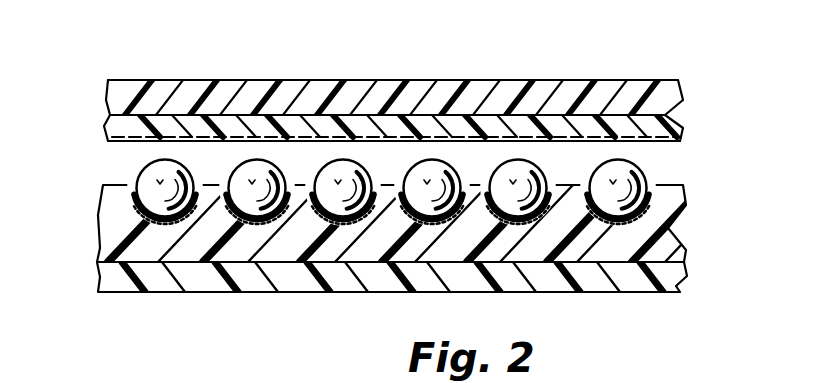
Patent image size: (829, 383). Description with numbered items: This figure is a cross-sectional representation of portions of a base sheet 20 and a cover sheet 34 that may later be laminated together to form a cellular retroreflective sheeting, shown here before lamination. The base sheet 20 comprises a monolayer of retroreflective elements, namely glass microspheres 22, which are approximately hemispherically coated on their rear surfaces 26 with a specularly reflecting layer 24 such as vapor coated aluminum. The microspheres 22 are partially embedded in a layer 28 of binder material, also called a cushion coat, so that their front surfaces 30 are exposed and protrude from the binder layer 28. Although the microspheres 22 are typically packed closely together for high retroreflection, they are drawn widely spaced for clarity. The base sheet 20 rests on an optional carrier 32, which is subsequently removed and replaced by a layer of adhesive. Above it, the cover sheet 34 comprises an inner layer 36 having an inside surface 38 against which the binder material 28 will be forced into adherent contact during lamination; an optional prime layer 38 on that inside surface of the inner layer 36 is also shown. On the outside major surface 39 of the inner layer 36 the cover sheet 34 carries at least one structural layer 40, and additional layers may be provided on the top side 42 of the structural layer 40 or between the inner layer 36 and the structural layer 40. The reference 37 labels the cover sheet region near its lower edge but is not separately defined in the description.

The base sheet 20 is at (399, 241).
The glass microspheres 22 is at (232, 180).
The specularly reflecting layer 24 is at (240, 227).
The rear surfaces 26 is at (672, 208).
The binder layer 28 is at (428, 223).
The front surfaces 30 is at (606, 170).
The carrier 32 is at (652, 283).
The cover sheet 34 is at (393, 94).
The inner layer 36 is at (369, 88).
The bottom surface 37 is at (118, 138).
The inside surface 38 is at (650, 145).
The outside major surface 39 is at (580, 116).
The structural layer 40 is at (162, 90).
The top side 42 is at (323, 80).